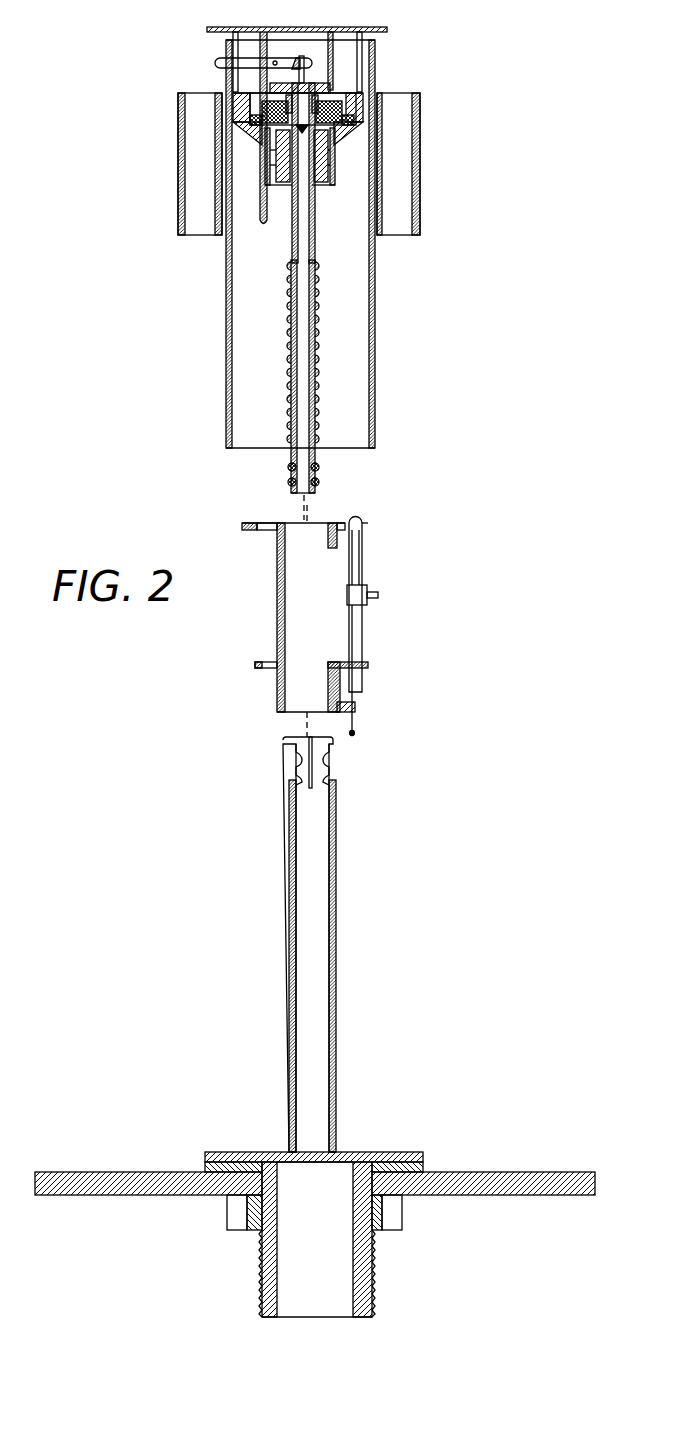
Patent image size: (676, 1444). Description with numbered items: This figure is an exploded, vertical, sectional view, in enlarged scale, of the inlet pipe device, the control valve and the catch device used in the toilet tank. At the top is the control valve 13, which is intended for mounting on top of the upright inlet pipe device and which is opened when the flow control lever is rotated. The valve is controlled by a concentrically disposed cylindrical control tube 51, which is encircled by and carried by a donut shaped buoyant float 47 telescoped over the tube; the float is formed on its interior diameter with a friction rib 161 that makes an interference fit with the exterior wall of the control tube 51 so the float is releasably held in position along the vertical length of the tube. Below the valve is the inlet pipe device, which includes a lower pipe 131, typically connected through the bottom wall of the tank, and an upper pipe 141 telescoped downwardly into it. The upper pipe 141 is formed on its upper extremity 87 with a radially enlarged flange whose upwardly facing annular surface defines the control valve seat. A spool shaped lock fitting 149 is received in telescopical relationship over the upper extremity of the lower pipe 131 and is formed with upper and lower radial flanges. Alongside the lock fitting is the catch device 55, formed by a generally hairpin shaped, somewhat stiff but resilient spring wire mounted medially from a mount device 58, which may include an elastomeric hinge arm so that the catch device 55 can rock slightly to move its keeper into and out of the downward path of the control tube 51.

The control valve 13 is at (348, 142).
The donut shaped float 47 is at (432, 178).
The control tube 51 is at (378, 348).
The catch device 55 is at (374, 553).
The mount device 58 is at (272, 692).
The upper extremity 87 is at (291, 243).
The lower pipe 131 is at (336, 905).
The upper pipe 141 is at (320, 341).
The lock fitting 149 is at (263, 595).
The rib 161 is at (225, 237).